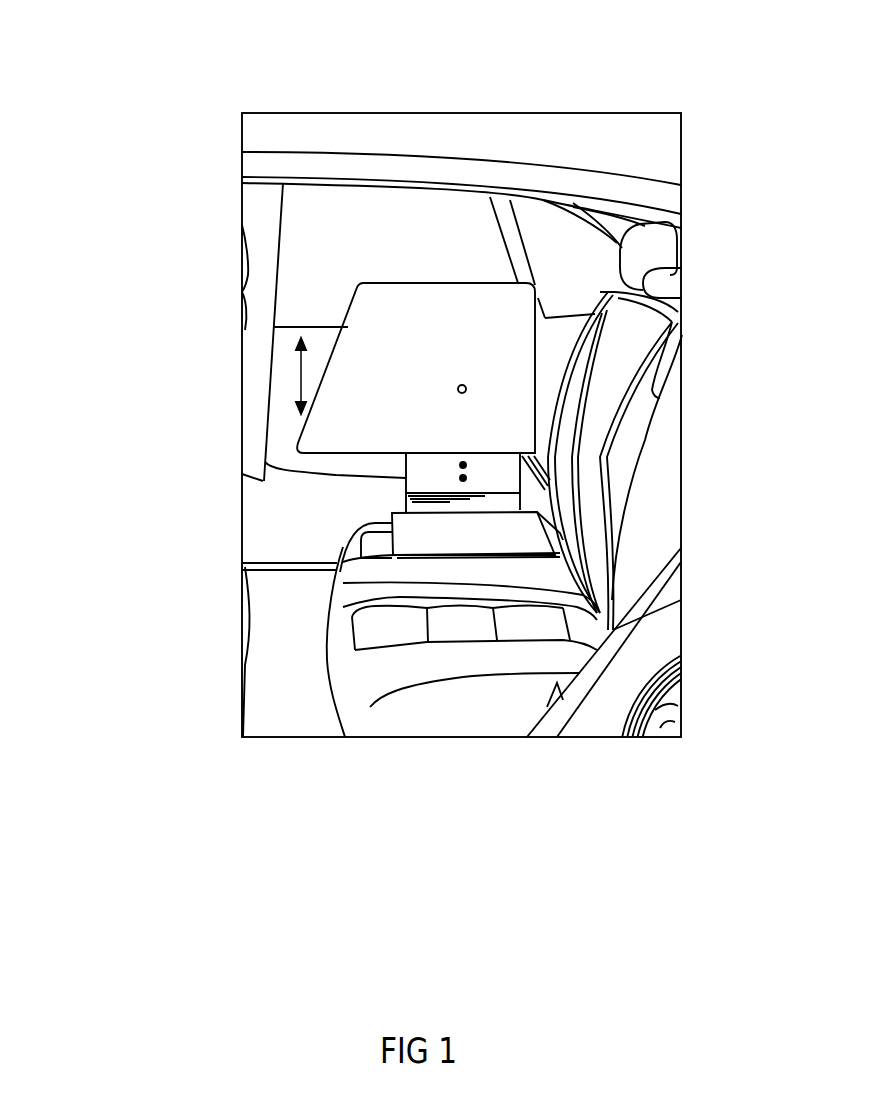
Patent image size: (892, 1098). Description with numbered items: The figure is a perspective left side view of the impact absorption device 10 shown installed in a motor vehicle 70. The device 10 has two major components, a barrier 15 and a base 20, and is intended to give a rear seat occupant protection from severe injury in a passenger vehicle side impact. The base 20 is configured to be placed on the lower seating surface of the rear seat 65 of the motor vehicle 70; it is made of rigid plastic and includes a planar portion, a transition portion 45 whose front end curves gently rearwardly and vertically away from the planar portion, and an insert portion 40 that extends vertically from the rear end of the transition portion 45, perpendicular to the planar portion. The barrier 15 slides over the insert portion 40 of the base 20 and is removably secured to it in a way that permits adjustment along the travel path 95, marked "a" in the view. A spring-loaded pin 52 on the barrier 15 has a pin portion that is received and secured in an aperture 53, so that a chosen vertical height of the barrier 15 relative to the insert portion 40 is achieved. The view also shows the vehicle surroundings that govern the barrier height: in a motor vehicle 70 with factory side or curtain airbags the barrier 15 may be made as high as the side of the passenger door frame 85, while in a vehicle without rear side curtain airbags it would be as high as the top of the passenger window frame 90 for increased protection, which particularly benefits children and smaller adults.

The impact absorption device 10 is at (130, 772).
The barrier 15 is at (490, 340).
The base 20 is at (443, 672).
The insert portion 40 is at (493, 477).
The transition portion 45 is at (513, 503).
The spring-loaded pin 52 is at (460, 384).
The aperture 53 is at (458, 461).
The rear seat 65 is at (365, 582).
The motor vehicle 70 is at (574, 168).
The passenger door frame 85 is at (290, 342).
The passenger window frame 90 is at (508, 218).
The travel path "a" 95 is at (290, 390).